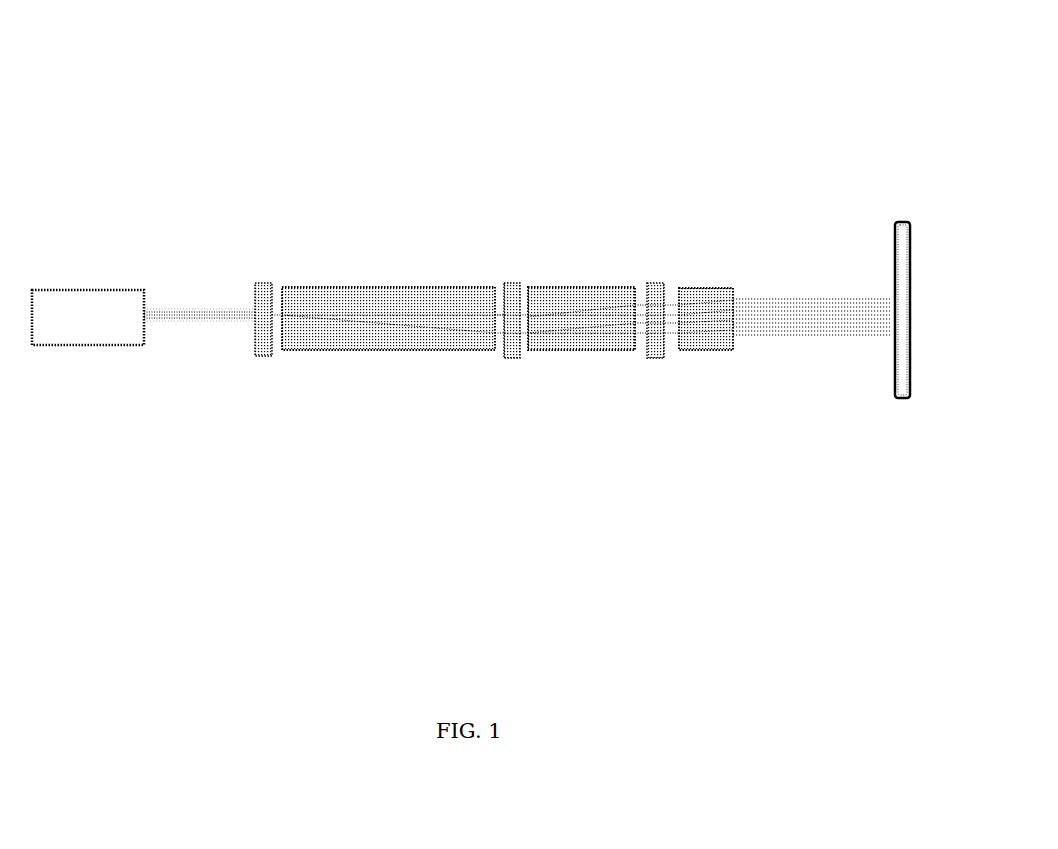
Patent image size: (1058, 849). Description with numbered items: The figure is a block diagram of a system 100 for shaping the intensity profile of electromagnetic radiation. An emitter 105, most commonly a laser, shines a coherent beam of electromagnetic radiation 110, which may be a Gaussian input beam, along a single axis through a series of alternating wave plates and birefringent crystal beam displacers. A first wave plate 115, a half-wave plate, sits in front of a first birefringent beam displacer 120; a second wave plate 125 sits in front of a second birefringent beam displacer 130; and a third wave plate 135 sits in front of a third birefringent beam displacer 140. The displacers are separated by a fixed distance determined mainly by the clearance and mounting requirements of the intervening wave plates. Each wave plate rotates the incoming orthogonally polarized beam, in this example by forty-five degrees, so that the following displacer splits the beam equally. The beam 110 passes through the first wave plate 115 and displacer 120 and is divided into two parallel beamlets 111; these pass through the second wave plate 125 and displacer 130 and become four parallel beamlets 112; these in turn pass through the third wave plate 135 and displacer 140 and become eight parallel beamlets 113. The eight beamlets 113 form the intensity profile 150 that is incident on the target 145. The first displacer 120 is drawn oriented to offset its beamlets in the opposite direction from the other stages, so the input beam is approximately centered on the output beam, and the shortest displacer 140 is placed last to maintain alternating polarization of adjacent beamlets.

The system 100 is at (683, 68).
The emitter 105 is at (88, 317).
The coherent beam of electromagnetic radiation 110 is at (207, 322).
The parallel beamlets 111 is at (410, 323).
The parallel beamlets 112 is at (605, 330).
The parallel beamlets 113 is at (718, 338).
The first wave plate 115 is at (243, 287).
The first birefringent beam displacer 120 is at (378, 285).
The second wave plate 125 is at (498, 282).
The second birefringent beam displacer 130 is at (583, 285).
The third wave plate 135 is at (645, 282).
The third birefringent beam displacer 140 is at (718, 285).
The target 145 is at (890, 240).
The intensity profile 150 is at (878, 333).